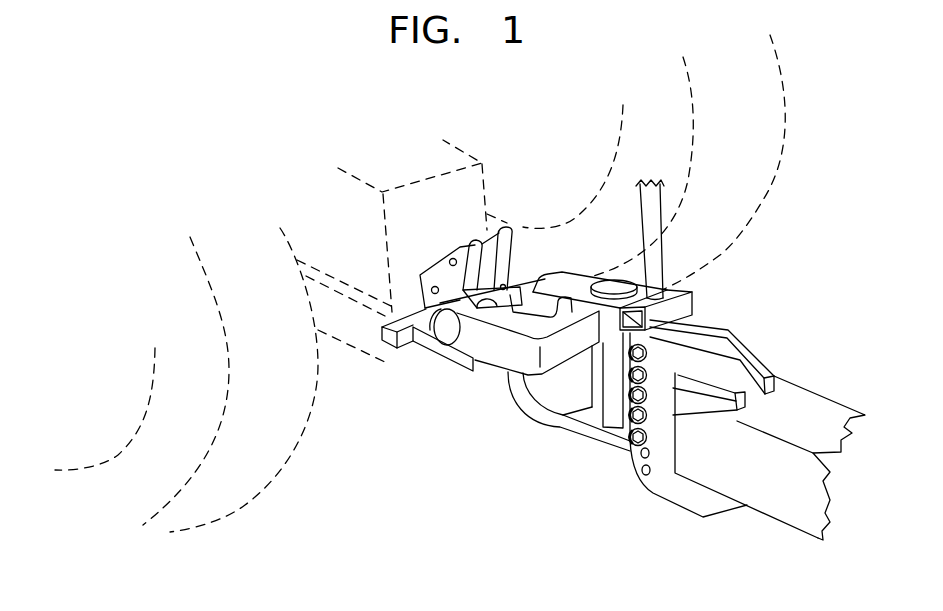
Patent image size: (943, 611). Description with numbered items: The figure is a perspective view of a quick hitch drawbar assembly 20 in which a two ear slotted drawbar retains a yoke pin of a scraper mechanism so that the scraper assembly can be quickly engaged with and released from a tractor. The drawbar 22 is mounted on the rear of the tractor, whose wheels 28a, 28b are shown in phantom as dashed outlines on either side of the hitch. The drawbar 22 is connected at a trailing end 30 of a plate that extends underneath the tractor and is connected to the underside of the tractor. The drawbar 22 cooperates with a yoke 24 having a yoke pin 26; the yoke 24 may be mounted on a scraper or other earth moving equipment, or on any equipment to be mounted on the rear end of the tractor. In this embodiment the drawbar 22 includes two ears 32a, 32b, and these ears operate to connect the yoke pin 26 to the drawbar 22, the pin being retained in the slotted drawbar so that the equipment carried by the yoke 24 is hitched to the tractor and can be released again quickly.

The quick hitch drawbar assembly 20 is at (436, 466).
The drawbar 22 is at (392, 350).
The yoke 24 is at (507, 362).
The yoke pin 26 is at (443, 340).
The wheel 28a is at (282, 334).
The wheel 28b is at (757, 122).
The trailing end 30 is at (477, 366).
The ear 32a is at (463, 252).
The ear 32b is at (518, 240).